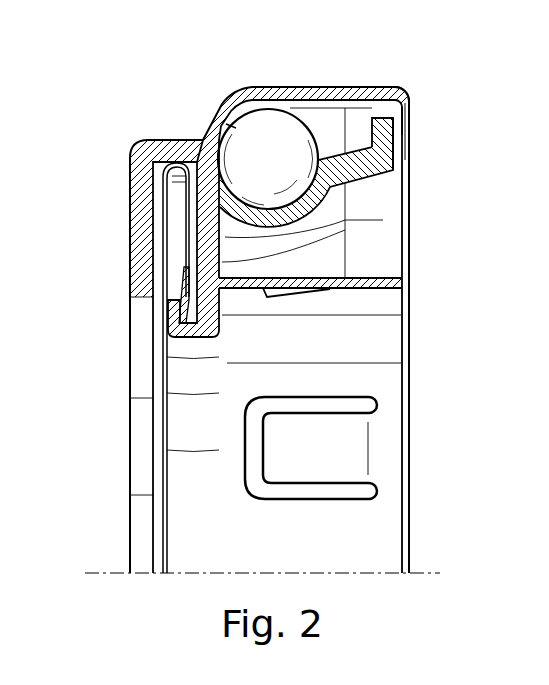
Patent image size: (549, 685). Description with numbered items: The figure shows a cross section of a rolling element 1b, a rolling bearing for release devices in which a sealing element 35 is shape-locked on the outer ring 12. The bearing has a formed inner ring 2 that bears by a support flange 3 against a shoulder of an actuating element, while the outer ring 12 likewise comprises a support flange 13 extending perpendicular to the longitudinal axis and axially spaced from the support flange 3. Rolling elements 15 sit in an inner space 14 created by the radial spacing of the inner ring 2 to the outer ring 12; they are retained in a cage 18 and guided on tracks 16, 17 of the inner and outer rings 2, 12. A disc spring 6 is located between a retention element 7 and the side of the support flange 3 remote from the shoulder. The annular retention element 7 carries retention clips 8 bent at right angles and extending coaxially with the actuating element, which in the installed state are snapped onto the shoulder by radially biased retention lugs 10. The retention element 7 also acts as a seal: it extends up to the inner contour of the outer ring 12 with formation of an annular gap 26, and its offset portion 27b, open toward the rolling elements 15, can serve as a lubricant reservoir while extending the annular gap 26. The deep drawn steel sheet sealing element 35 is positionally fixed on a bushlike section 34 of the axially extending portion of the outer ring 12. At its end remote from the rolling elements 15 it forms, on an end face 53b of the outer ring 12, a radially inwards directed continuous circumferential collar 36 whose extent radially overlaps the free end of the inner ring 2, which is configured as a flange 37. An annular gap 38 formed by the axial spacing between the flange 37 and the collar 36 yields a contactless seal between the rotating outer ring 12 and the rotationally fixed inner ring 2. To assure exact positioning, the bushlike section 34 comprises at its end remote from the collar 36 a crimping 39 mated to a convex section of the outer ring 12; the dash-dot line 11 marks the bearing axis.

The rolling element 1b is at (108, 261).
The inner ring 2 is at (366, 164).
The support flange 3 is at (211, 294).
The disc spring 6 is at (178, 297).
The retention element 7 is at (193, 260).
The retention clips 8 is at (364, 281).
The retention lugs 10 is at (306, 467).
The axis of rotation 11 is at (98, 571).
The outer ring 12 is at (153, 141).
The support flange 13 is at (186, 288).
The inner space 14 is at (318, 96).
The rolling elements 15 is at (250, 165).
The track 16 is at (296, 190).
The track 17 is at (232, 126).
The cage 18 is at (196, 165).
The annular gap 26 is at (160, 160).
The offset portion 27b is at (175, 192).
The bushlike section 34 is at (270, 89).
The sealing element 35 is at (368, 79).
The collar 36 is at (406, 102).
The flange 37 is at (394, 150).
The annular gap 38 is at (403, 116).
The crimping 39 is at (231, 97).
The end face 53b is at (403, 97).